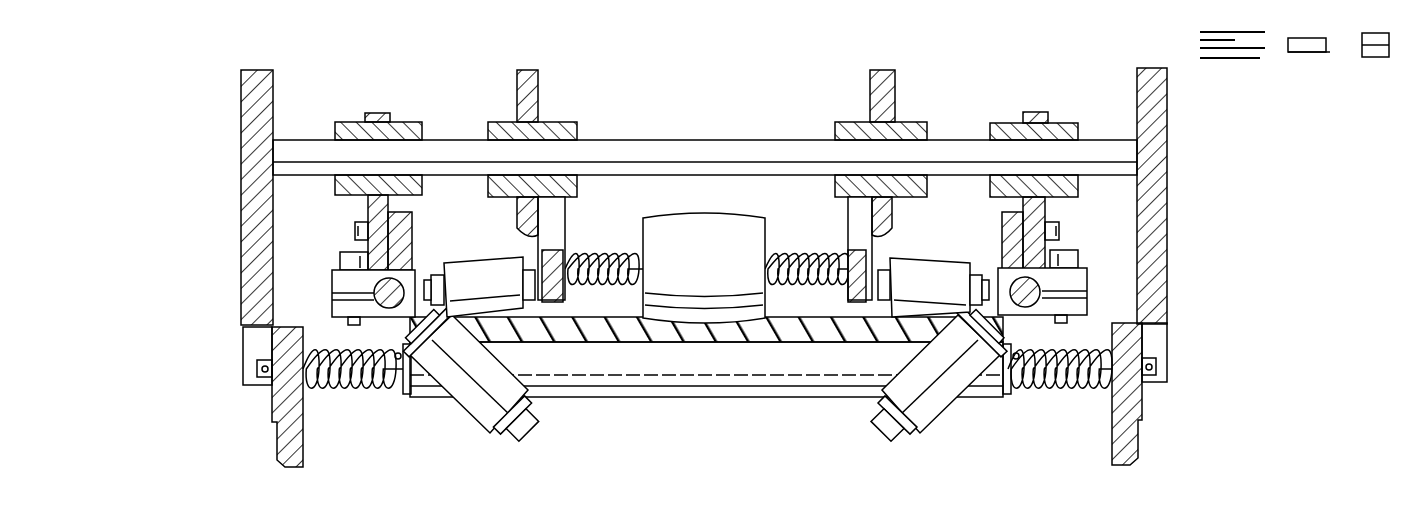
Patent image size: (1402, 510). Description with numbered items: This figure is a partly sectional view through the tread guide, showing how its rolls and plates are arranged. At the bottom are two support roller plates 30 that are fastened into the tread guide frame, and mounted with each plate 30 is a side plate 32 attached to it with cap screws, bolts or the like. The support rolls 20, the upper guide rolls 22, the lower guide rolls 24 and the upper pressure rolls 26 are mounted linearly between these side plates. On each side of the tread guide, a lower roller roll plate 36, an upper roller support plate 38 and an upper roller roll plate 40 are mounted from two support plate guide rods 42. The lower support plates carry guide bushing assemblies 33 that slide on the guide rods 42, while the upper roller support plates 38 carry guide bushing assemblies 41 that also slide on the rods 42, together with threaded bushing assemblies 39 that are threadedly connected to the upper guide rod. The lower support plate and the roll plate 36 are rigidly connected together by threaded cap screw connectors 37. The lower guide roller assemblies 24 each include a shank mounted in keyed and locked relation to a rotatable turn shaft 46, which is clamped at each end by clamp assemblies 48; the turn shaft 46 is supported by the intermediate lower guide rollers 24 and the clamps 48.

The support rolls 20 is at (660, 392).
The upper guide rolls 22 is at (480, 272).
The lower guide rollers 24 is at (478, 410).
The upper pressure rolls 26 is at (719, 265).
The support roller plates 30 is at (280, 412).
The side plate 32 is at (245, 240).
The guide bushing assemblies 33 is at (400, 132).
The lower roller roll plate 36 is at (1008, 230).
The threaded cap screw connectors 37 is at (355, 232).
The upper roller support plate 38 is at (538, 84).
The threaded bushing assemblies 39 is at (1046, 84).
The upper roller roll plate 40 is at (556, 234).
The guide bushing assemblies 41 is at (562, 130).
The support plate guide rods 42 is at (672, 150).
The turn shaft 46 is at (385, 303).
The clamp assemblies 48 is at (336, 283).